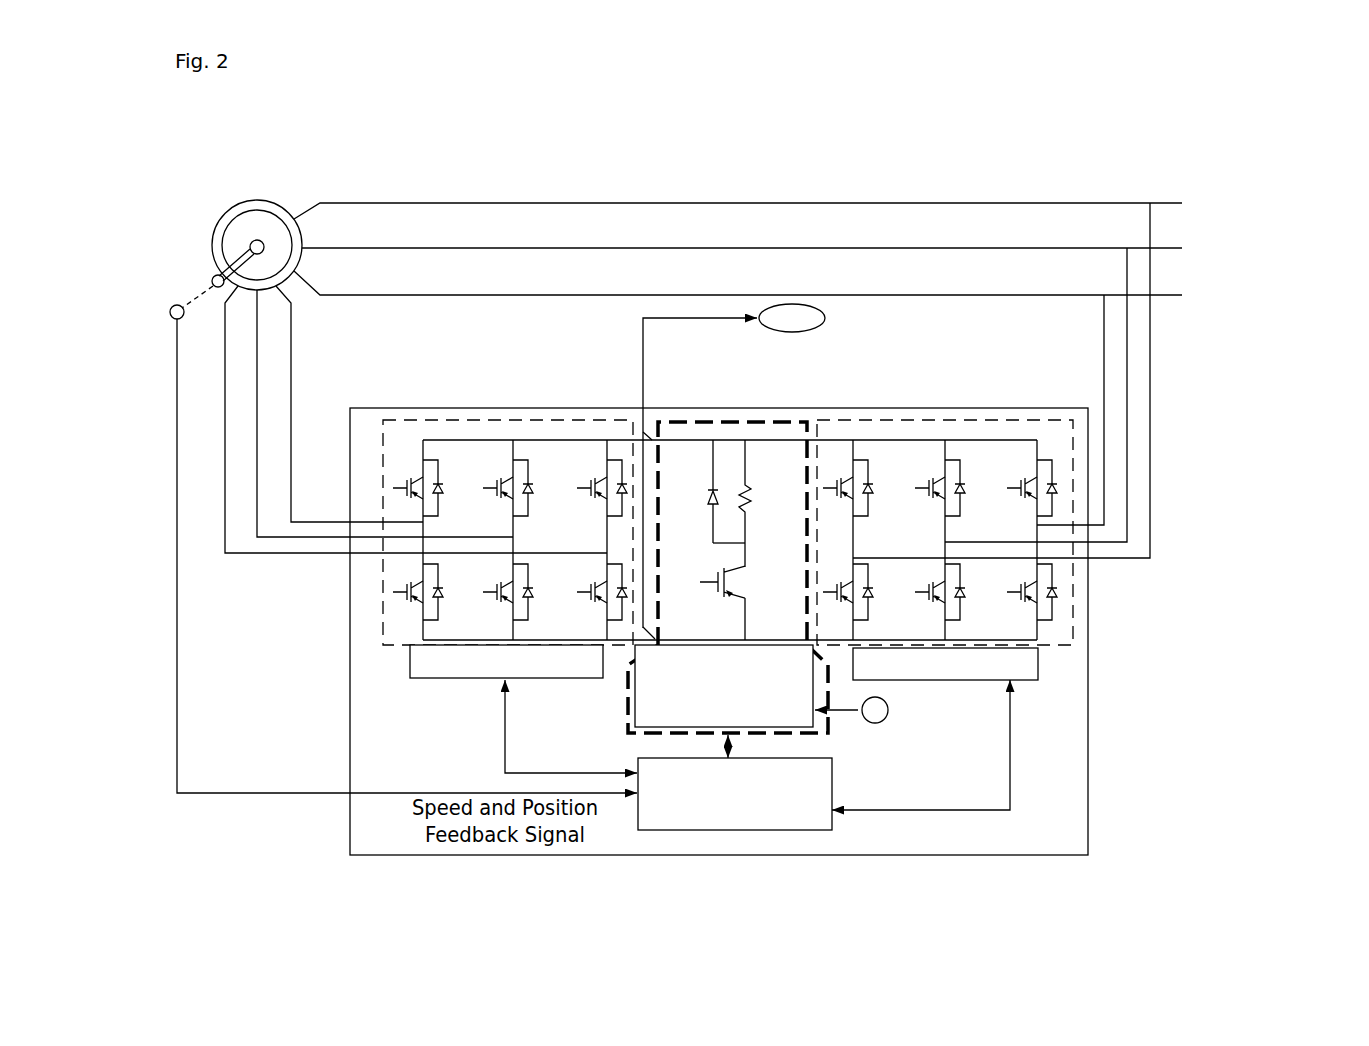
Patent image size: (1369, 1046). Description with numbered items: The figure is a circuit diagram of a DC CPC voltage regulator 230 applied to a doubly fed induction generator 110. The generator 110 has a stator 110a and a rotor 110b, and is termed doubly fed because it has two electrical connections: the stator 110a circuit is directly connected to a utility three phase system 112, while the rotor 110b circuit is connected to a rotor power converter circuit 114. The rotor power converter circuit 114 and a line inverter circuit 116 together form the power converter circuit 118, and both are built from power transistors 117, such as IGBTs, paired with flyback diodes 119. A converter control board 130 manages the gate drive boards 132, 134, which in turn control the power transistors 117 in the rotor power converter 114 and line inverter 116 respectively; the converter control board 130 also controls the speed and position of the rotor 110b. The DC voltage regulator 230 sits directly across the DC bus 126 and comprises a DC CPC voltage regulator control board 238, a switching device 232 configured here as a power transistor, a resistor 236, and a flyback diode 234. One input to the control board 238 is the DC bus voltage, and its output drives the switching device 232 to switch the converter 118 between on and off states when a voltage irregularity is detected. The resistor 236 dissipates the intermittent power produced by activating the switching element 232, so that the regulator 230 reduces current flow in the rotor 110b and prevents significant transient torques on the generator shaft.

The doubly fed induction generator 110 is at (223, 224).
The stator 110a is at (210, 232).
The rotor 110b is at (222, 255).
The utility three phase system 112 is at (805, 380).
The rotor power converter circuit 114 is at (500, 528).
The line inverter circuit 116 is at (950, 531).
The power transistor 117 is at (504, 494).
The power converter circuit 118 is at (719, 631).
The flyback diode 119 is at (547, 481).
The DC bus 126 is at (653, 471).
The converter control board 130 is at (735, 782).
The gate drive board 132 is at (508, 709).
The gate drive board 134 is at (954, 729).
The DC CPC voltage regulator 230 is at (758, 546).
The switching device 232 is at (746, 603).
The flyback diode 234 is at (690, 491).
The resistor 236 is at (770, 503).
The DC CPC voltage regulator control board 238 is at (724, 686).